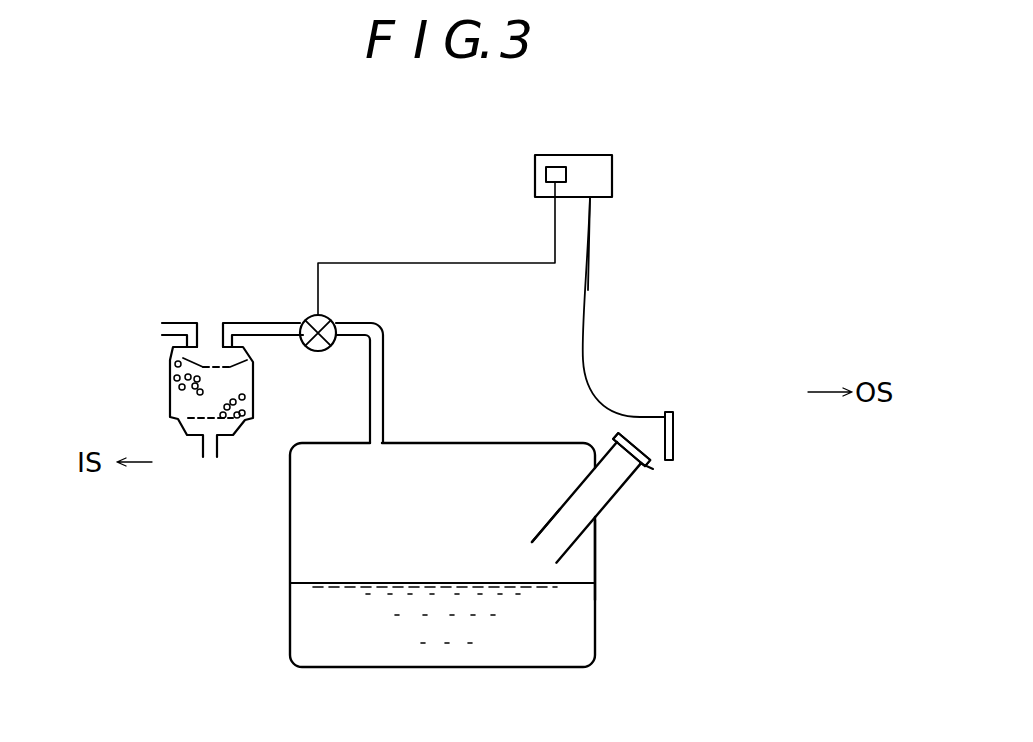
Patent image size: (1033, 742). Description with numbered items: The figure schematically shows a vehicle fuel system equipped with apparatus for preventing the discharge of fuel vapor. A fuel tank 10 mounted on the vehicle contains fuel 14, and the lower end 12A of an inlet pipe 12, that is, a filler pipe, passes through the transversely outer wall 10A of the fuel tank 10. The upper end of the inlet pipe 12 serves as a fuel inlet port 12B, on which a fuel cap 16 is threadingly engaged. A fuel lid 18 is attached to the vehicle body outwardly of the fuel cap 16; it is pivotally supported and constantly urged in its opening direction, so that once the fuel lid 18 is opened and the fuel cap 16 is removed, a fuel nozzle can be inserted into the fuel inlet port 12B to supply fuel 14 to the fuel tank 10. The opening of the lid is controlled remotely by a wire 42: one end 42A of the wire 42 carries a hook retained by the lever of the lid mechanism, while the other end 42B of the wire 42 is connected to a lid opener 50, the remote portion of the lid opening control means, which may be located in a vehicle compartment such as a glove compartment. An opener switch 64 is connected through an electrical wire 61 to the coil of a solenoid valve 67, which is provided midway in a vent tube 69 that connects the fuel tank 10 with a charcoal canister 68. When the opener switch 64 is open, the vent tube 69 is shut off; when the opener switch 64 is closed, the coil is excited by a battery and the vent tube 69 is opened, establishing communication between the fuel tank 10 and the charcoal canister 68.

The fuel tank 10 is at (500, 410).
The outer wall 10A is at (598, 548).
The inlet pipe 12 is at (621, 507).
The lower end 12A is at (543, 533).
The fuel inlet port 12B is at (632, 482).
The fuel 14 is at (470, 655).
The fuel cap 16 is at (653, 464).
The fuel lid 18 is at (673, 430).
The wire 42 is at (597, 341).
The one end of wire 42A is at (660, 412).
The other end of wire 42B is at (590, 212).
The lid opener 50 is at (605, 155).
The electrical wire 61 is at (440, 263).
The opener switch 64 is at (555, 166).
The solenoid valve 67 is at (332, 316).
The charcoal canister 68 is at (188, 412).
The vent tube 69 is at (384, 352).